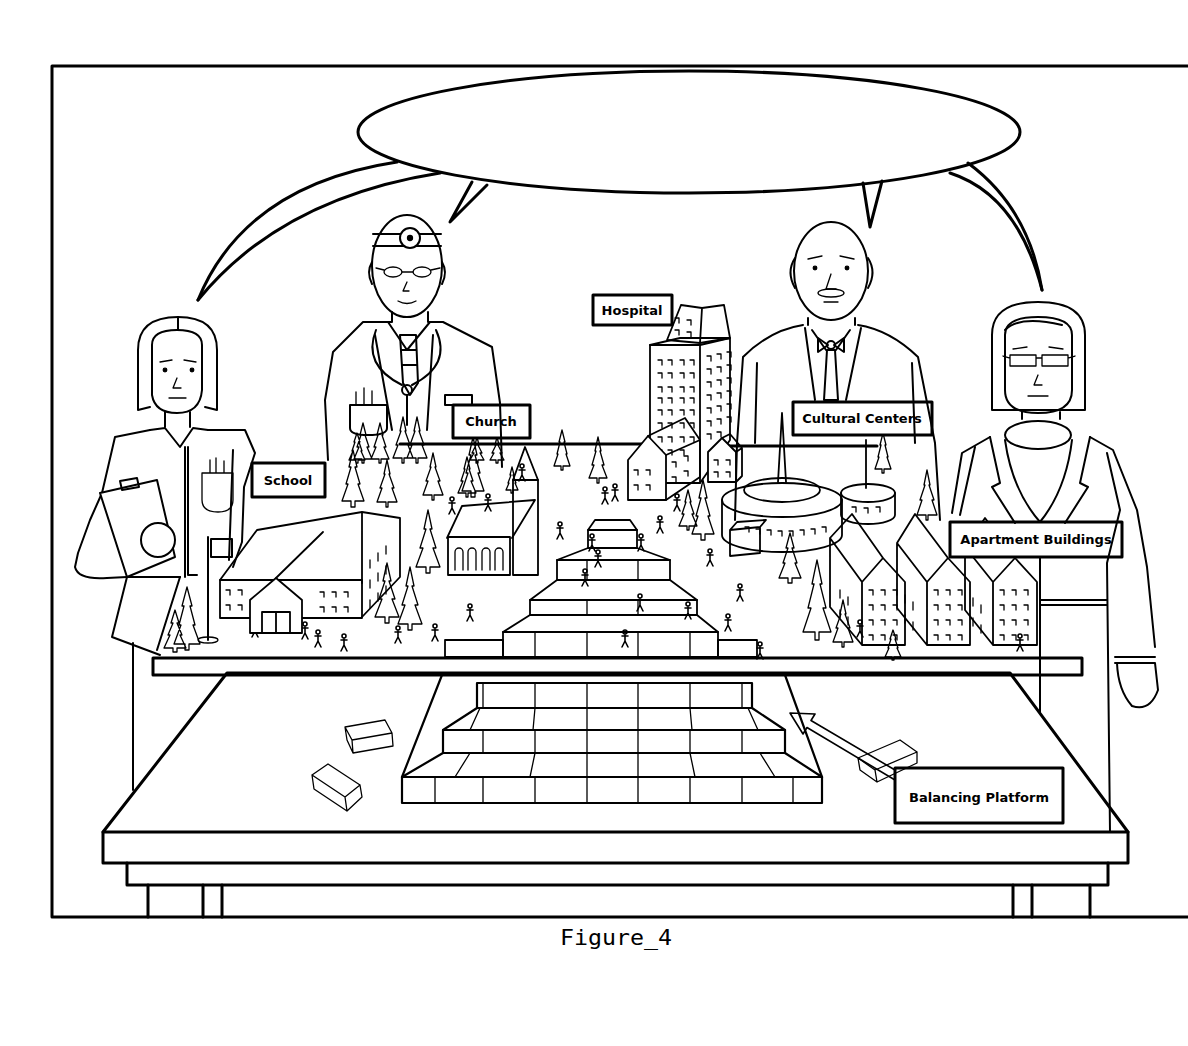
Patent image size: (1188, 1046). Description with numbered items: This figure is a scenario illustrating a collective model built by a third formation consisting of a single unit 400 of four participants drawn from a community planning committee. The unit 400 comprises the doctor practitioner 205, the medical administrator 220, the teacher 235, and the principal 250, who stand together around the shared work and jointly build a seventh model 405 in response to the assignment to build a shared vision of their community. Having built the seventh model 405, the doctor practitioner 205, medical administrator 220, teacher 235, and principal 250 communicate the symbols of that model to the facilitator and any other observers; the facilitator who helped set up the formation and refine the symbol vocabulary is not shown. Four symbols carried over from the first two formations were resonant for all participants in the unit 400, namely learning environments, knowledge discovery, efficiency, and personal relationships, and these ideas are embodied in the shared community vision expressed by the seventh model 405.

The unit 400 is at (1090, 135).
The seventh model 405 is at (157, 151).
The medical administrator 220 is at (207, 347).
The doctor practitioner 205 is at (438, 296).
The teacher 235 is at (877, 320).
The principal 250 is at (1083, 395).